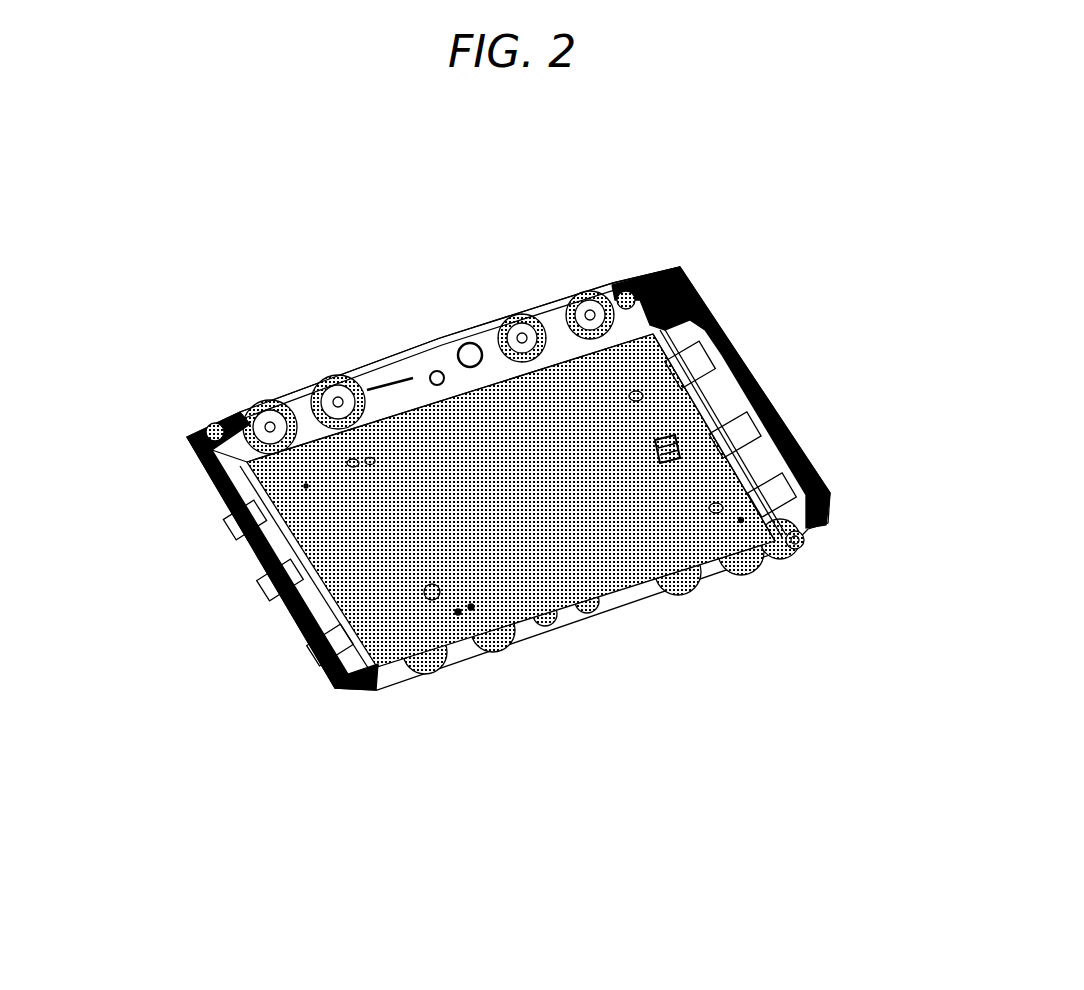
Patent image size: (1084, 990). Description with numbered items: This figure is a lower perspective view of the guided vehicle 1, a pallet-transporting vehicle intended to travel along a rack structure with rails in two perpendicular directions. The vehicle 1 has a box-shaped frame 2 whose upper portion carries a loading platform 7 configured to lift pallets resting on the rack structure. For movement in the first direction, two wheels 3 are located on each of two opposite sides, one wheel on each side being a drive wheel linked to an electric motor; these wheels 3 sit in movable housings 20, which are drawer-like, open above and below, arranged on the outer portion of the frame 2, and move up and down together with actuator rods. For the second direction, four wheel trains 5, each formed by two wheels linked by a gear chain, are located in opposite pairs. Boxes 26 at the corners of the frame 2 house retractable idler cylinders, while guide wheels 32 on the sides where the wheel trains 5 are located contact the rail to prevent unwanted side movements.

The guided vehicle 1 is at (395, 322).
The box-shaped frame 2 is at (517, 573).
The wheels 3 is at (698, 340).
The wheel trains 5 is at (545, 295).
The loading platform 7 is at (465, 332).
The movable housings 20 is at (762, 410).
The boxes 26 is at (682, 285).
The guide wheels 32 is at (626, 298).